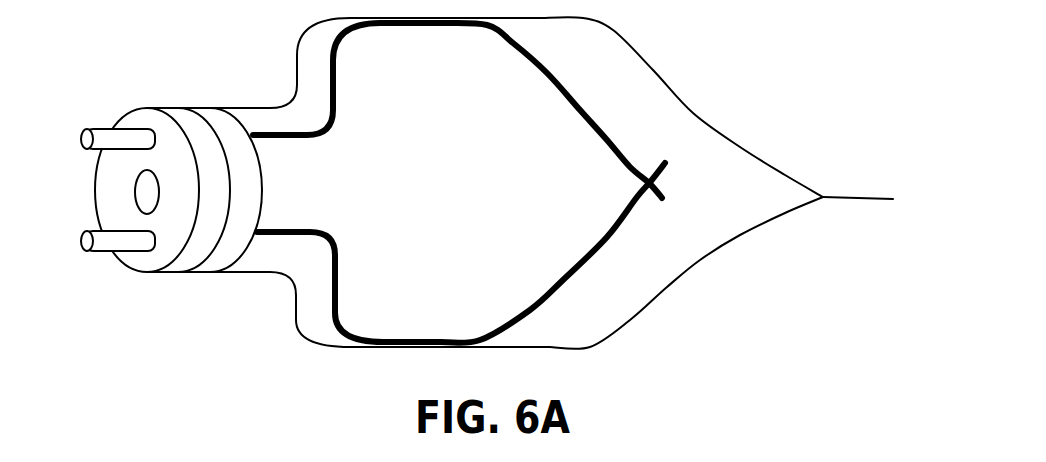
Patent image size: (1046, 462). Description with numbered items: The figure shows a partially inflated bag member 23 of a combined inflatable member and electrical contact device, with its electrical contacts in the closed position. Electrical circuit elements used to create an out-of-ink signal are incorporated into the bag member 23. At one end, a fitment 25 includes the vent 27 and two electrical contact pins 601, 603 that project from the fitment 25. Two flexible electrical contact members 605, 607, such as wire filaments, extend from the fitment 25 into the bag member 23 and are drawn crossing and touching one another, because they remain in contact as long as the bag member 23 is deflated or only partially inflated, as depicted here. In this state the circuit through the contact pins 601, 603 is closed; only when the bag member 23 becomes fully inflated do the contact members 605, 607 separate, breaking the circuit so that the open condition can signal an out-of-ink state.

The bag member 23 is at (657, 70).
The fitment 25 is at (187, 262).
The vent 27 is at (148, 194).
The electrical contact pin 601 is at (112, 128).
The electrical contact pin 603 is at (112, 252).
The flexible electrical contact member 605 is at (572, 98).
The flexible electrical contact member 607 is at (572, 270).